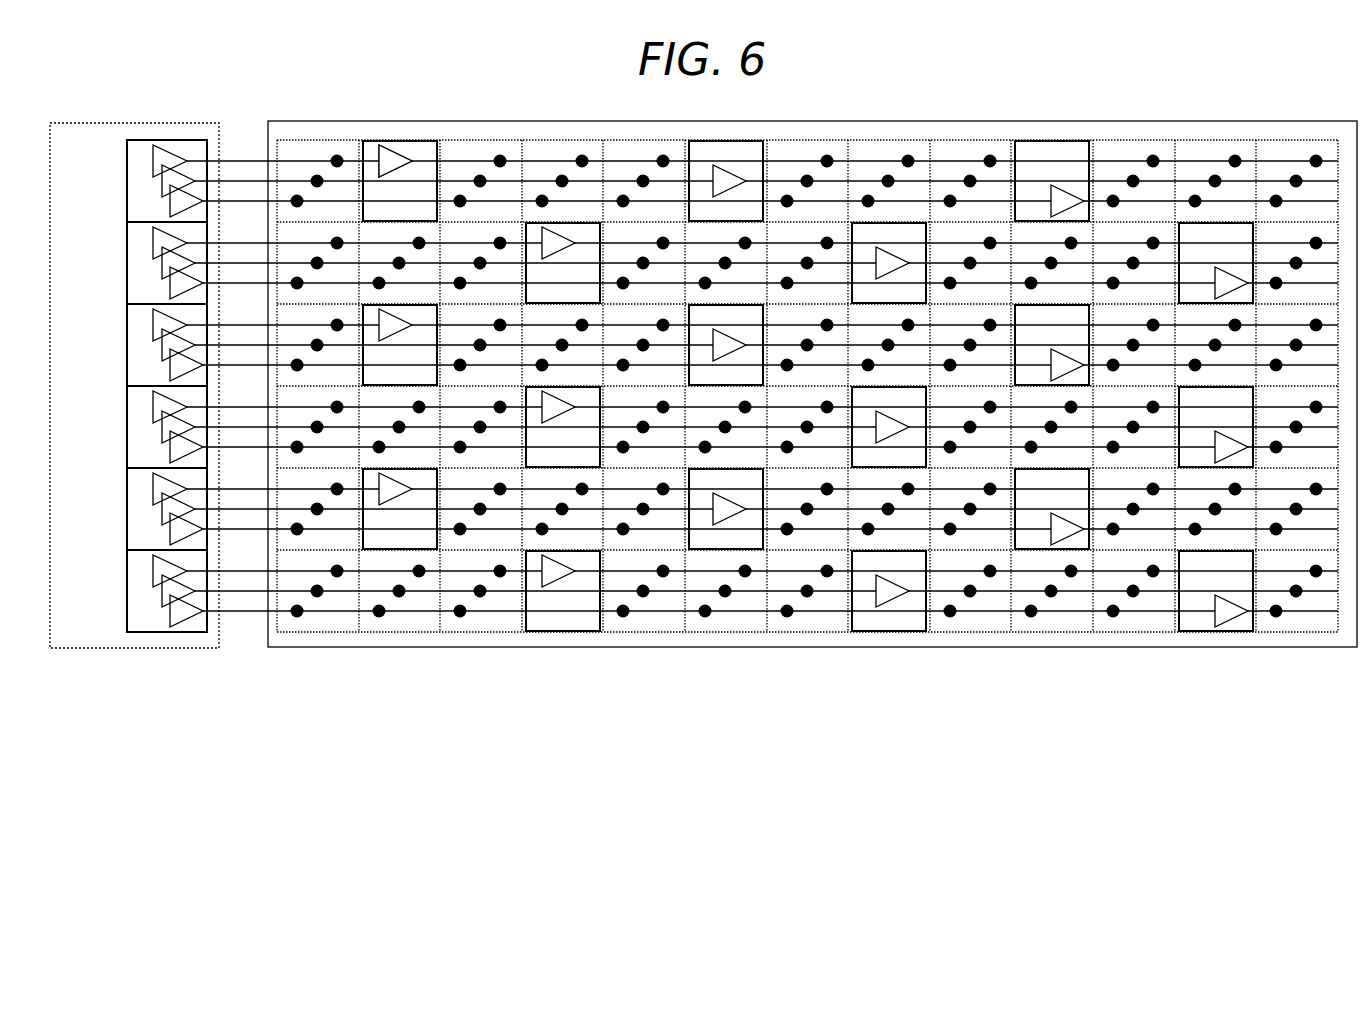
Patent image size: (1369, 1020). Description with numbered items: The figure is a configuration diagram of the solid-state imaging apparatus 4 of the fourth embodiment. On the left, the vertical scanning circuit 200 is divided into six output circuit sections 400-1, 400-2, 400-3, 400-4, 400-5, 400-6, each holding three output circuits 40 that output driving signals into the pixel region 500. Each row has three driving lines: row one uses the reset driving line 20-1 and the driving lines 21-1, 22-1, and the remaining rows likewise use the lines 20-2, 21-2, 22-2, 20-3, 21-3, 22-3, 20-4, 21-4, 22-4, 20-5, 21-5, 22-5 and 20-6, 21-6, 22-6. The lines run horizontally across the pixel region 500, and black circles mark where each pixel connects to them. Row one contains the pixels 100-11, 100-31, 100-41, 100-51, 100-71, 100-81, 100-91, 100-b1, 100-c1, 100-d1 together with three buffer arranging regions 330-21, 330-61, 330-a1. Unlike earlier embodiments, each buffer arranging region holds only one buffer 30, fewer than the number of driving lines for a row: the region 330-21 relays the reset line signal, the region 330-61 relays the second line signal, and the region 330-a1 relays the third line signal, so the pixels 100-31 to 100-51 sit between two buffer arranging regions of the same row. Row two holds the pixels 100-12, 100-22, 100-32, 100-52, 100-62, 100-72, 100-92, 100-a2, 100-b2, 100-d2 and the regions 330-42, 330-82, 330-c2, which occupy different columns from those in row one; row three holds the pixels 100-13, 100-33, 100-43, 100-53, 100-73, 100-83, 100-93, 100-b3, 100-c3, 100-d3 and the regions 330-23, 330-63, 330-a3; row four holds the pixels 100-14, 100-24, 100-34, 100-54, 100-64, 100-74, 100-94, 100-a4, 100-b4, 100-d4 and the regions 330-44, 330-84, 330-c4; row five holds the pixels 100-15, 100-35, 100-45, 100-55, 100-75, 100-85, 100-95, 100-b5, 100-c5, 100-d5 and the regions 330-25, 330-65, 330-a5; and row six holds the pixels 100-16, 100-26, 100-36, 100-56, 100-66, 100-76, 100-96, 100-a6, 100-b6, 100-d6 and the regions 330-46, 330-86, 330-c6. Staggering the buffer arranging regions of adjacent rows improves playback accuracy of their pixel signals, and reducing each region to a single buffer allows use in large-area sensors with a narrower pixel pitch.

The solid-state imaging apparatus 4 is at (752, 689).
The pixel region 500 is at (317, 647).
The vertical scanning circuit 200 is at (122, 122).
The buffer 30 is at (385, 150).
The output circuit 40 is at (162, 187).
The output circuit section 400-1 is at (133, 181).
The output circuit section 400-2 is at (127, 270).
The output circuit section 400-3 is at (127, 352).
The output circuit section 400-4 is at (127, 434).
The output circuit section 400-5 is at (127, 516).
The output circuit section 400-6 is at (127, 598).
The reset driving line 20-1 is at (275, 161).
The driving line 21-1 is at (275, 181).
The driving line 22-1 is at (275, 201).
The reset driving line 20-2 is at (275, 243).
The driving line 21-2 is at (275, 263).
The driving line 22-2 is at (275, 283).
The reset driving line 20-3 is at (275, 325).
The driving line 21-3 is at (275, 345).
The driving line 22-3 is at (275, 365).
The reset driving line 20-4 is at (275, 407).
The driving line 21-4 is at (275, 427).
The driving line 22-4 is at (275, 447).
The reset driving line 20-5 is at (275, 489).
The driving line 21-5 is at (275, 509).
The driving line 22-5 is at (275, 529).
The reset driving line 20-6 is at (275, 571).
The driving line 21-6 is at (275, 591).
The driving line 22-6 is at (275, 611).
The pixel 100-11 is at (315, 177).
The pixel 100-31 is at (478, 177).
The pixel 100-41 is at (560, 177).
The pixel 100-51 is at (641, 177).
The pixel 100-71 is at (805, 177).
The pixel 100-81 is at (886, 177).
The pixel 100-91 is at (968, 177).
The pixel 100-b1 is at (1131, 177).
The pixel 100-c1 is at (1213, 177).
The pixel 100-d1 is at (1294, 177).
The buffer arranging region 330-21 is at (400, 181).
The buffer arranging region 330-61 is at (726, 181).
The buffer arranging region 330-a1 is at (1052, 181).
The pixel 100-12 is at (315, 259).
The pixel 100-22 is at (397, 259).
The pixel 100-32 is at (478, 259).
The pixel 100-52 is at (641, 259).
The pixel 100-62 is at (723, 259).
The pixel 100-72 is at (805, 259).
The pixel 100-92 is at (968, 259).
The pixel 100-a2 is at (1049, 259).
The pixel 100-b2 is at (1131, 259).
The pixel 100-d2 is at (1294, 259).
The buffer arranging region 330-42 is at (563, 263).
The buffer arranging region 330-82 is at (889, 263).
The buffer arranging region 330-c2 is at (1216, 263).
The pixel 100-13 is at (315, 341).
The pixel 100-33 is at (478, 341).
The pixel 100-43 is at (560, 341).
The pixel 100-53 is at (641, 341).
The pixel 100-73 is at (805, 341).
The pixel 100-83 is at (886, 341).
The pixel 100-93 is at (968, 341).
The pixel 100-b3 is at (1131, 341).
The pixel 100-c3 is at (1213, 341).
The pixel 100-d3 is at (1294, 341).
The buffer arranging region 330-23 is at (400, 345).
The buffer arranging region 330-63 is at (726, 345).
The buffer arranging region 330-a3 is at (1052, 345).
The pixel 100-14 is at (315, 423).
The pixel 100-24 is at (397, 423).
The pixel 100-34 is at (478, 423).
The pixel 100-54 is at (641, 423).
The pixel 100-64 is at (723, 423).
The pixel 100-74 is at (805, 423).
The pixel 100-94 is at (968, 423).
The pixel 100-a4 is at (1049, 423).
The pixel 100-b4 is at (1131, 423).
The pixel 100-d4 is at (1294, 423).
The buffer arranging region 330-44 is at (563, 427).
The buffer arranging region 330-84 is at (889, 427).
The buffer arranging region 330-c4 is at (1216, 427).
The pixel 100-15 is at (315, 505).
The pixel 100-35 is at (478, 505).
The pixel 100-45 is at (560, 505).
The pixel 100-55 is at (641, 505).
The pixel 100-75 is at (805, 505).
The pixel 100-85 is at (886, 505).
The pixel 100-95 is at (968, 505).
The pixel 100-b5 is at (1131, 505).
The pixel 100-c5 is at (1213, 505).
The pixel 100-d5 is at (1294, 505).
The buffer arranging region 330-25 is at (400, 509).
The buffer arranging region 330-65 is at (726, 509).
The buffer arranging region 330-a5 is at (1052, 509).
The pixel 100-16 is at (315, 587).
The pixel 100-26 is at (397, 587).
The pixel 100-36 is at (478, 587).
The pixel 100-56 is at (641, 587).
The pixel 100-66 is at (723, 587).
The pixel 100-76 is at (805, 587).
The pixel 100-96 is at (968, 587).
The pixel 100-a6 is at (1049, 587).
The pixel 100-b6 is at (1131, 587).
The pixel 100-d6 is at (1294, 587).
The buffer arranging region 330-46 is at (563, 591).
The buffer arranging region 330-86 is at (889, 591).
The buffer arranging region 330-c6 is at (1216, 591).